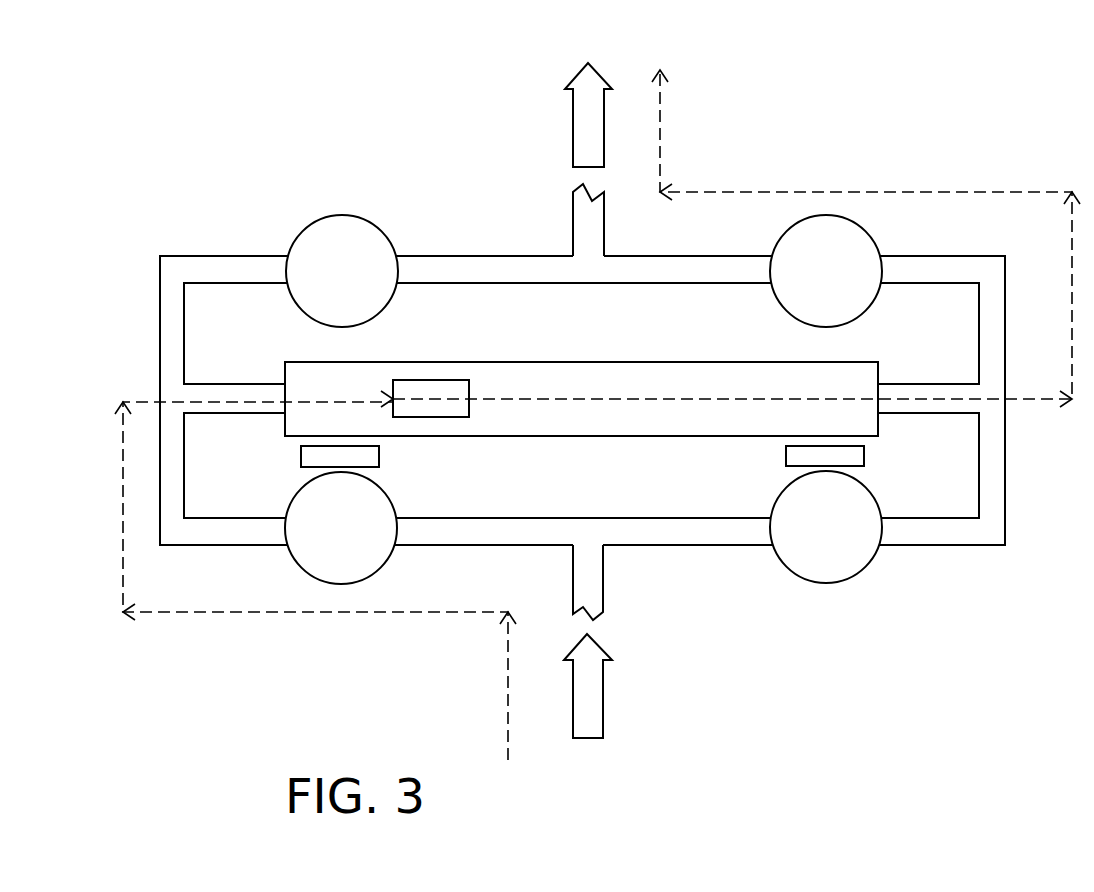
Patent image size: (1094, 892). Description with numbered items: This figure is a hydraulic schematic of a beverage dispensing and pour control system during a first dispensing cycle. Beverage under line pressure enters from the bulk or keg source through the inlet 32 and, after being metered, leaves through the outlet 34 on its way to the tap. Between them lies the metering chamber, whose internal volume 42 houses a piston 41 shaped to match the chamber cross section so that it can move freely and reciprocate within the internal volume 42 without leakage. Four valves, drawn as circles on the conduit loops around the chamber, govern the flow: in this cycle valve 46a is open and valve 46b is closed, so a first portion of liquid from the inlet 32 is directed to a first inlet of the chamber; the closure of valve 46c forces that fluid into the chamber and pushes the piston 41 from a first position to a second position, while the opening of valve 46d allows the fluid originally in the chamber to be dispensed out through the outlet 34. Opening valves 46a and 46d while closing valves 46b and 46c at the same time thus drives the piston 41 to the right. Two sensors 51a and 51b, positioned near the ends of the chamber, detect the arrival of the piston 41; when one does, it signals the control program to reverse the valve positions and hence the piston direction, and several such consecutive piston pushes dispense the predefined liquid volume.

The beverage supply 32 is at (588, 720).
The metered discharge 34 is at (588, 92).
The piston 41 is at (438, 387).
The internal volume 42 is at (581, 399).
The valve 46a is at (362, 567).
The valve 46b is at (824, 563).
The valve 46c is at (334, 235).
The valve 46d is at (852, 230).
The sensor 51a is at (380, 457).
The sensor 51b is at (783, 453).